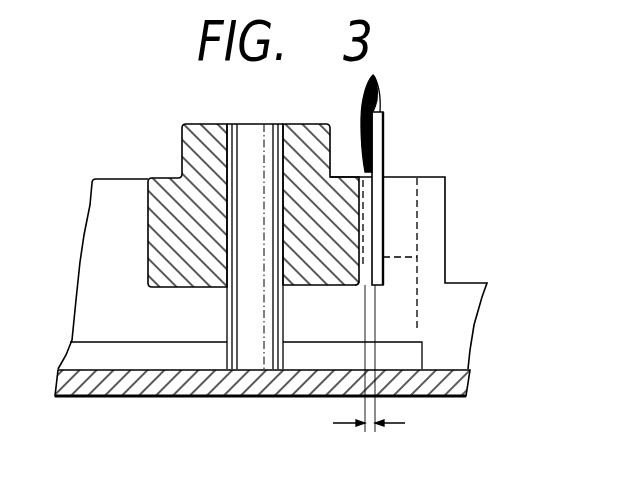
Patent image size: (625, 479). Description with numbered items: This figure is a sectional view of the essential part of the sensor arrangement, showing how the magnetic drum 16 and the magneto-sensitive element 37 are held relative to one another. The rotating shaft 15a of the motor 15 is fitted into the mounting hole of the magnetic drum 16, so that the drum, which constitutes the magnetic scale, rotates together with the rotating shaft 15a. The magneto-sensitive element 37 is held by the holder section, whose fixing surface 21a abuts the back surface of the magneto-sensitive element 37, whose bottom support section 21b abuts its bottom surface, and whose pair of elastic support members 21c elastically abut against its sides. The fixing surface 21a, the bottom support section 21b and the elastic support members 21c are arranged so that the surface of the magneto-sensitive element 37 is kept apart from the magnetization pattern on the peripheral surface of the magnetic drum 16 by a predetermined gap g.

The motor 15 is at (117, 398).
The rotating shaft 15a is at (227, 320).
The magnetic drum 16 is at (182, 146).
The fixing surface 21a is at (344, 284).
The bottom support section 21b is at (412, 272).
The elastic support members 21c is at (405, 180).
The magneto-sensitive element 37 is at (384, 123).
The gap g is at (373, 430).